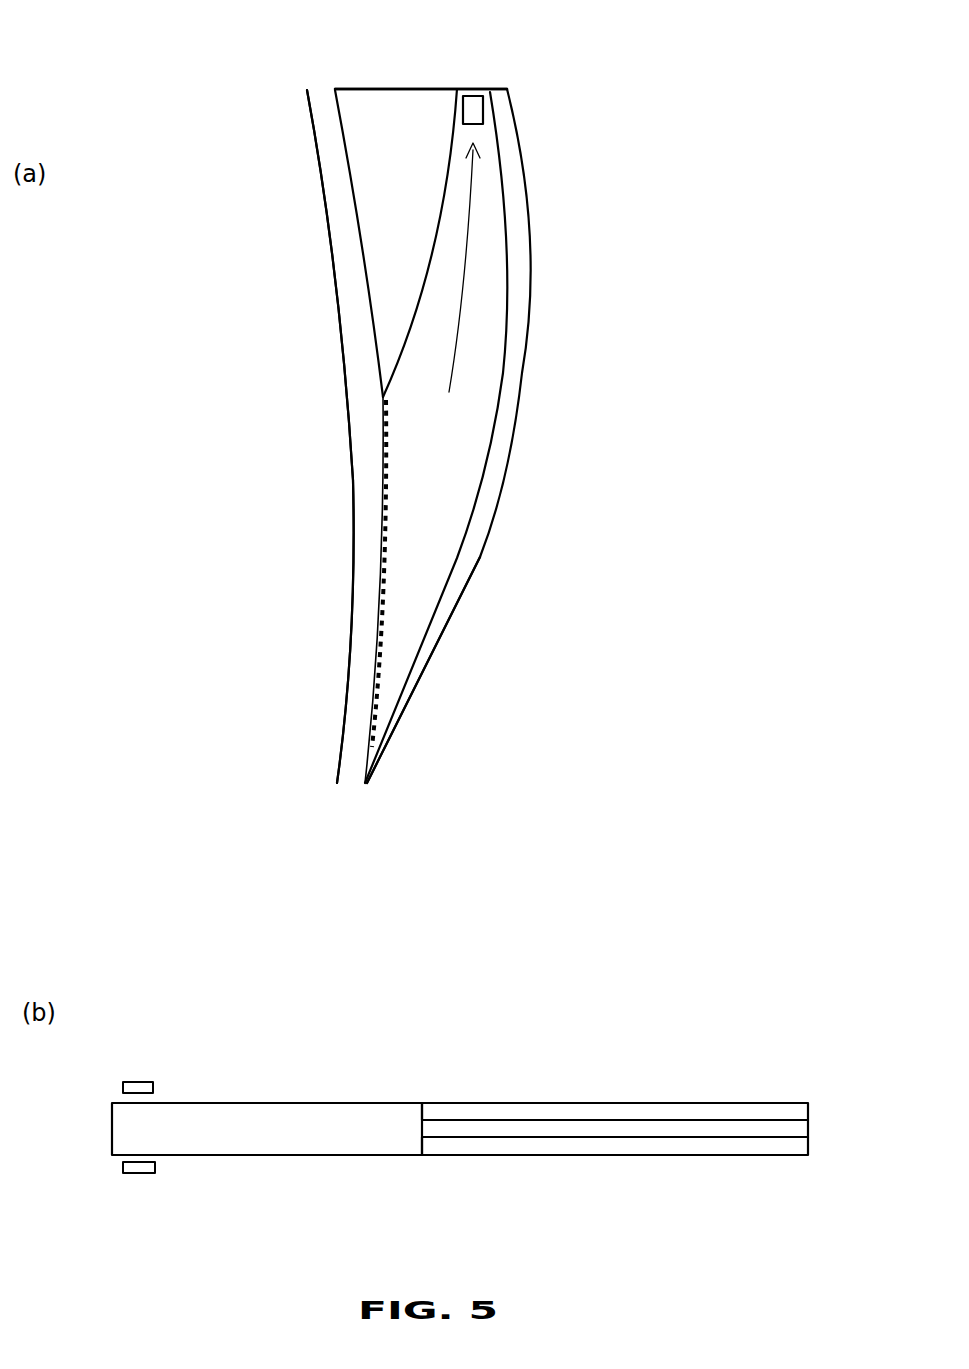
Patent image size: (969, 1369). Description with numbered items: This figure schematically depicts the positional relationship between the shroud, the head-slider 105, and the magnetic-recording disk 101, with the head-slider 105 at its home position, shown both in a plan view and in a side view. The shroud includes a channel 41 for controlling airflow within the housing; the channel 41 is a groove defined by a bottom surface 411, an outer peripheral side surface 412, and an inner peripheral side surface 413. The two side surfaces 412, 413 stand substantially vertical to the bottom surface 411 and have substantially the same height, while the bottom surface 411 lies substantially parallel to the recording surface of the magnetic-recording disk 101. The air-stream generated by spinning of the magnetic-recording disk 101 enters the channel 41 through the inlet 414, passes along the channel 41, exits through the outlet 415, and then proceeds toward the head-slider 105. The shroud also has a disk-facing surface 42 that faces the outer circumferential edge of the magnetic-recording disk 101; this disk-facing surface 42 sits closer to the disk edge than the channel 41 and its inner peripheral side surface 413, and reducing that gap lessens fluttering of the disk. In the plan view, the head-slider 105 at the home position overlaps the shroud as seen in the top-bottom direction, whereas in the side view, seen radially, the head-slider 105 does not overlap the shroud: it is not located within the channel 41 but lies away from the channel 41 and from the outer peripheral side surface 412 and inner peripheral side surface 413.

The channel 41 is at (489, 279).
The disk-facing surface 42 is at (343, 132).
The bottom surface 411 is at (483, 550).
The outer peripheral side surface 412 is at (498, 402).
The inner peripheral side surface 413 is at (440, 250).
The inlet 414 is at (383, 573).
The outlet 415 is at (462, 87).
The head-slider 105 is at (484, 107).
The magnetic-recording disk 101 is at (340, 757).